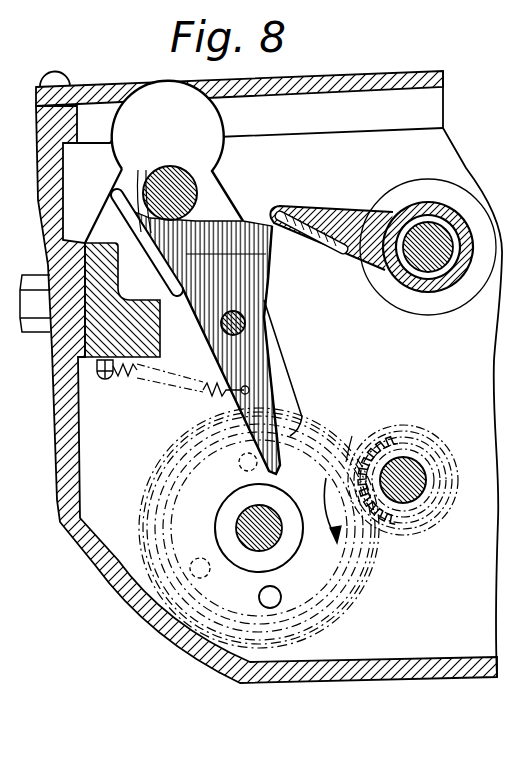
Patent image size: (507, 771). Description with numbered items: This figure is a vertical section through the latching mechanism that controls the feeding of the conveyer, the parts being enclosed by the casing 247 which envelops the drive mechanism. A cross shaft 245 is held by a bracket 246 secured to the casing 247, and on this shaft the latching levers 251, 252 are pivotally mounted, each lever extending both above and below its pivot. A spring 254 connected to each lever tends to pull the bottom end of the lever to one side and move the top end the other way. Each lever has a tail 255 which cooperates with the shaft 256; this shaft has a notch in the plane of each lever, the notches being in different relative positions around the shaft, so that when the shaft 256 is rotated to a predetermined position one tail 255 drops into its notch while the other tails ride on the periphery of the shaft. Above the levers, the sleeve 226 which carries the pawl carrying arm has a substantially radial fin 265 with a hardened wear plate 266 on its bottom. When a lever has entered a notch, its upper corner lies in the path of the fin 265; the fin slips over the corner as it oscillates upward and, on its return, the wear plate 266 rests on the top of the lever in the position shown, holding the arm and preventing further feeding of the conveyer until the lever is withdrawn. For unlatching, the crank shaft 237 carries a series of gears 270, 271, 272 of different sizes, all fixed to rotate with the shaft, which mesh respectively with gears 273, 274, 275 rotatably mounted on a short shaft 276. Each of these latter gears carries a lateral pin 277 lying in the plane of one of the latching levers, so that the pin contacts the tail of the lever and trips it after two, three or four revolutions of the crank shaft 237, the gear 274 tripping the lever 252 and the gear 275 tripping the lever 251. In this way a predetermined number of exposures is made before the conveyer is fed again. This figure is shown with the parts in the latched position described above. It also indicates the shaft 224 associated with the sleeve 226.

The shaft 224 is at (430, 263).
The sleeve 226 is at (431, 205).
The crank shaft 237 is at (405, 463).
The cross shaft 245 is at (246, 322).
The bracket 246 is at (142, 292).
The casing 247 is at (178, 657).
The latching lever 251 is at (244, 218).
The latching lever 252 is at (292, 378).
The spring 254 is at (133, 380).
The tail 255 is at (158, 185).
The shaft 256 is at (187, 182).
The fin 265 is at (342, 197).
The wear plate 266 is at (330, 243).
The gear 270 is at (453, 463).
The gear 271 is at (440, 503).
The gear 272 is at (394, 508).
The gear 273 is at (340, 593).
The gear 274 is at (352, 580).
The gear 275 is at (344, 443).
The short shaft 276 is at (242, 522).
The lateral pin 277 is at (241, 465).